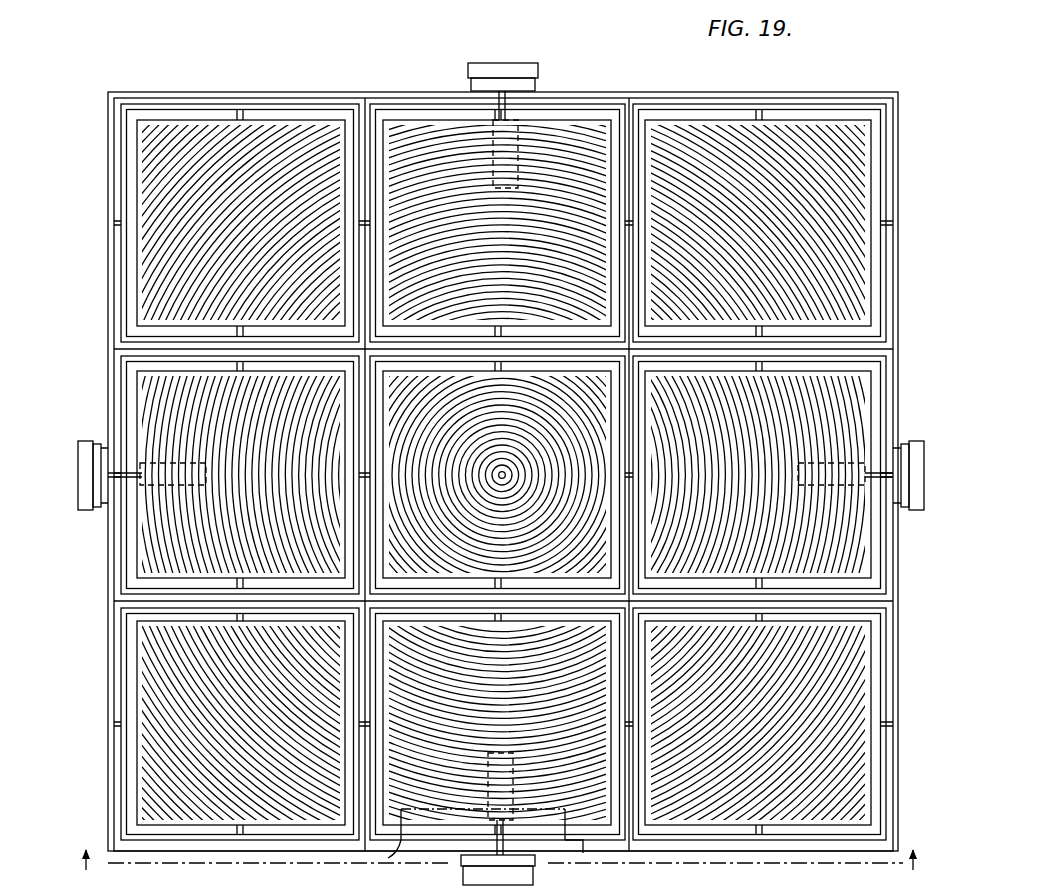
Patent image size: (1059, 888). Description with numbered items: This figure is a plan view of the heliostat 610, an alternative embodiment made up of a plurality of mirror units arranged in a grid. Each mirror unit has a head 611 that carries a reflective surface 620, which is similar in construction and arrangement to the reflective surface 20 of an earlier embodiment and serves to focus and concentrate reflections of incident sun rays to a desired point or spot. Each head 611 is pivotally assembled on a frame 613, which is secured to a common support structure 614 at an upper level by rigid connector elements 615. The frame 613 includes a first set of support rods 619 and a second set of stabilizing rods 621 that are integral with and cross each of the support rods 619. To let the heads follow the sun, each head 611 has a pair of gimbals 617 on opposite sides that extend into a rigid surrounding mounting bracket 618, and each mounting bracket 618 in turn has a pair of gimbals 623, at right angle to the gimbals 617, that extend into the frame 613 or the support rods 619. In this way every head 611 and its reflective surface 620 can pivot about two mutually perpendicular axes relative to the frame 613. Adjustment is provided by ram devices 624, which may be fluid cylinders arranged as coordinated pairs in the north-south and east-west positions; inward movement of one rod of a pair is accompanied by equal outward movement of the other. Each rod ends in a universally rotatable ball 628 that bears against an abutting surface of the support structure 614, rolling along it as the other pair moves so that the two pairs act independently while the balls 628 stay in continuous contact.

The heliostat 610 is at (95, 642).
The head 611 is at (265, 102).
The frame 613 is at (890, 792).
The support structure 614 is at (480, 55).
The rigid connector element 615 is at (484, 72).
The gimbal 617 is at (228, 100).
The mounting bracket 618 is at (548, 586).
The support rod 619 is at (357, 92).
The reflective surface 620 is at (582, 128).
The stabilizing rod 621 is at (885, 341).
The gimbal 623 is at (100, 214).
The ram device 624 is at (484, 150).
The universally rotatable ball 628 is at (530, 58).
The reflective surface 20 is at (498, 850).